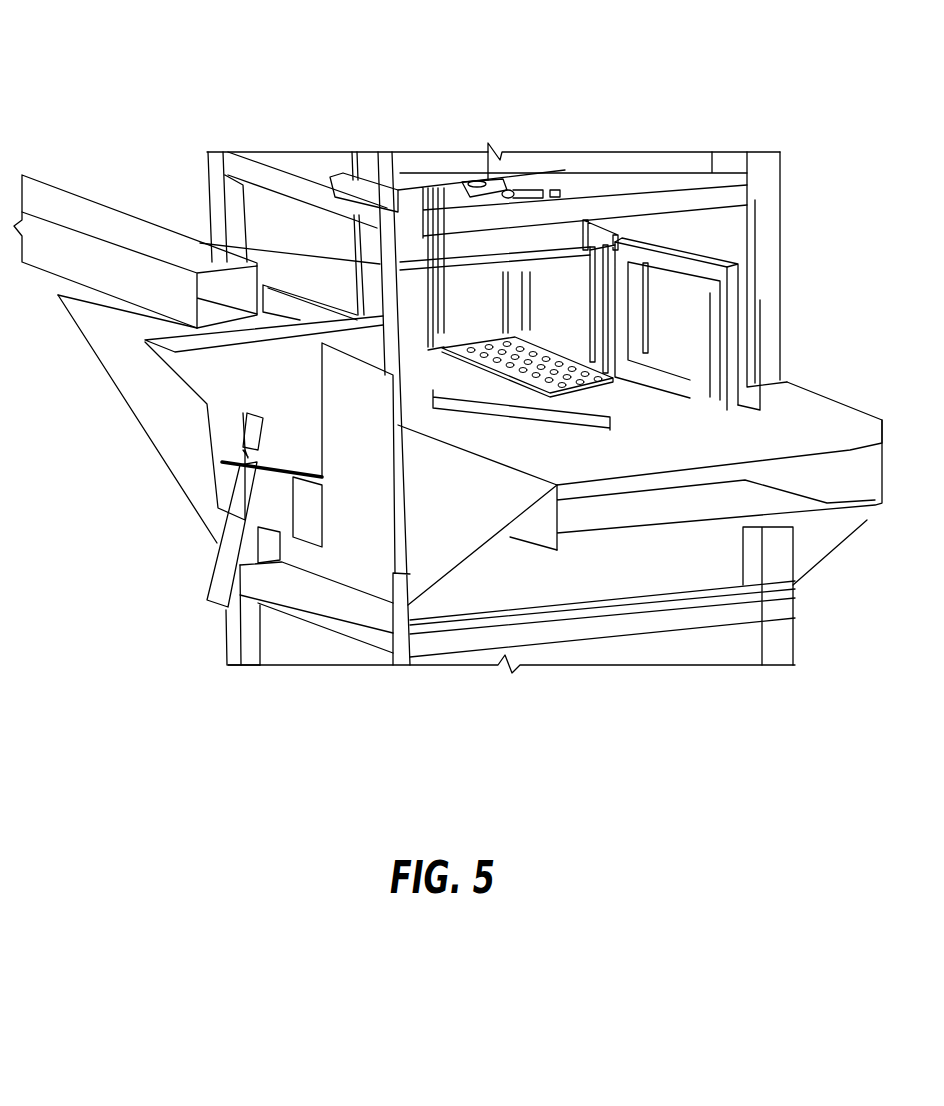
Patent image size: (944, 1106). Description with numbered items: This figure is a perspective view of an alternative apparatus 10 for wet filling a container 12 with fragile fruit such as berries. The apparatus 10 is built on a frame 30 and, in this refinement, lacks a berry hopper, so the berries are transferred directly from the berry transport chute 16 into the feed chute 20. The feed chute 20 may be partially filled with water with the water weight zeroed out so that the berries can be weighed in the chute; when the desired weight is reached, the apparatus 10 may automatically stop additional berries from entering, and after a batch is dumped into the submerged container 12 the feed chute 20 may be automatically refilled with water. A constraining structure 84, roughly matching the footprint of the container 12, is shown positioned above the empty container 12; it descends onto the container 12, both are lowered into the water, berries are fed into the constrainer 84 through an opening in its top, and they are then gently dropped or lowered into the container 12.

The apparatus 10 is at (213, 68).
The container 12 is at (577, 312).
The berry transport chute 16 is at (45, 253).
The feed chute 20 is at (220, 370).
The frame 30 is at (248, 648).
The constraining structure 84 is at (566, 244).